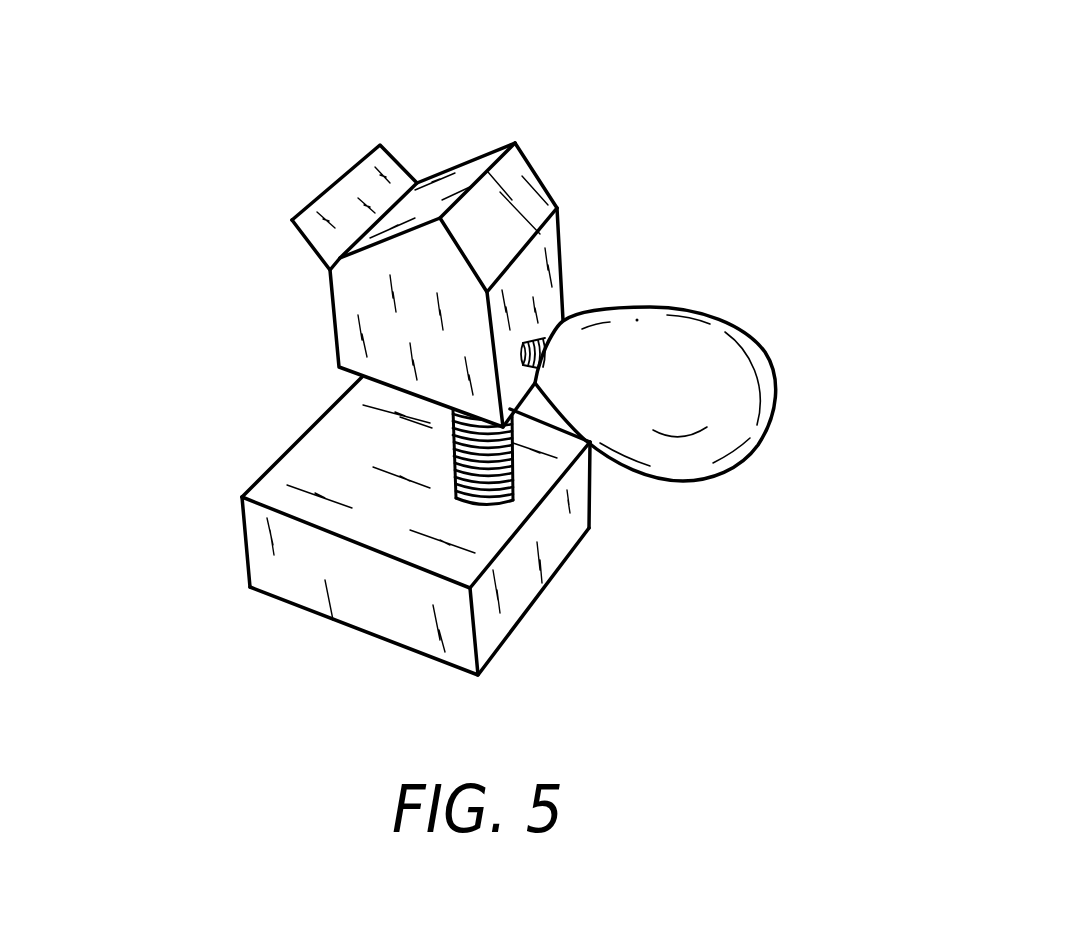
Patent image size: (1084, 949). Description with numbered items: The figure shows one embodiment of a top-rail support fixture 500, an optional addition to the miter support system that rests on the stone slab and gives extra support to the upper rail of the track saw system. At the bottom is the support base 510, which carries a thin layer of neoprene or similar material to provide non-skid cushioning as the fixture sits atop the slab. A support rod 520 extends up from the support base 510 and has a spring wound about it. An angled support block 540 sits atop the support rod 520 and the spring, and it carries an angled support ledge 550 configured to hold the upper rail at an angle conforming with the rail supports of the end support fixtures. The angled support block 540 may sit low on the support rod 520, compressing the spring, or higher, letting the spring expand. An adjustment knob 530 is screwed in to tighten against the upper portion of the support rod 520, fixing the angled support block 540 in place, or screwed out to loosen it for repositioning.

The top-rail support fixture 500 is at (172, 252).
The support base 510 is at (530, 613).
The support rod 520 is at (513, 475).
The adjustment knob 530 is at (747, 332).
The angled support block 540 is at (537, 175).
The angled support ledge 550 is at (400, 165).